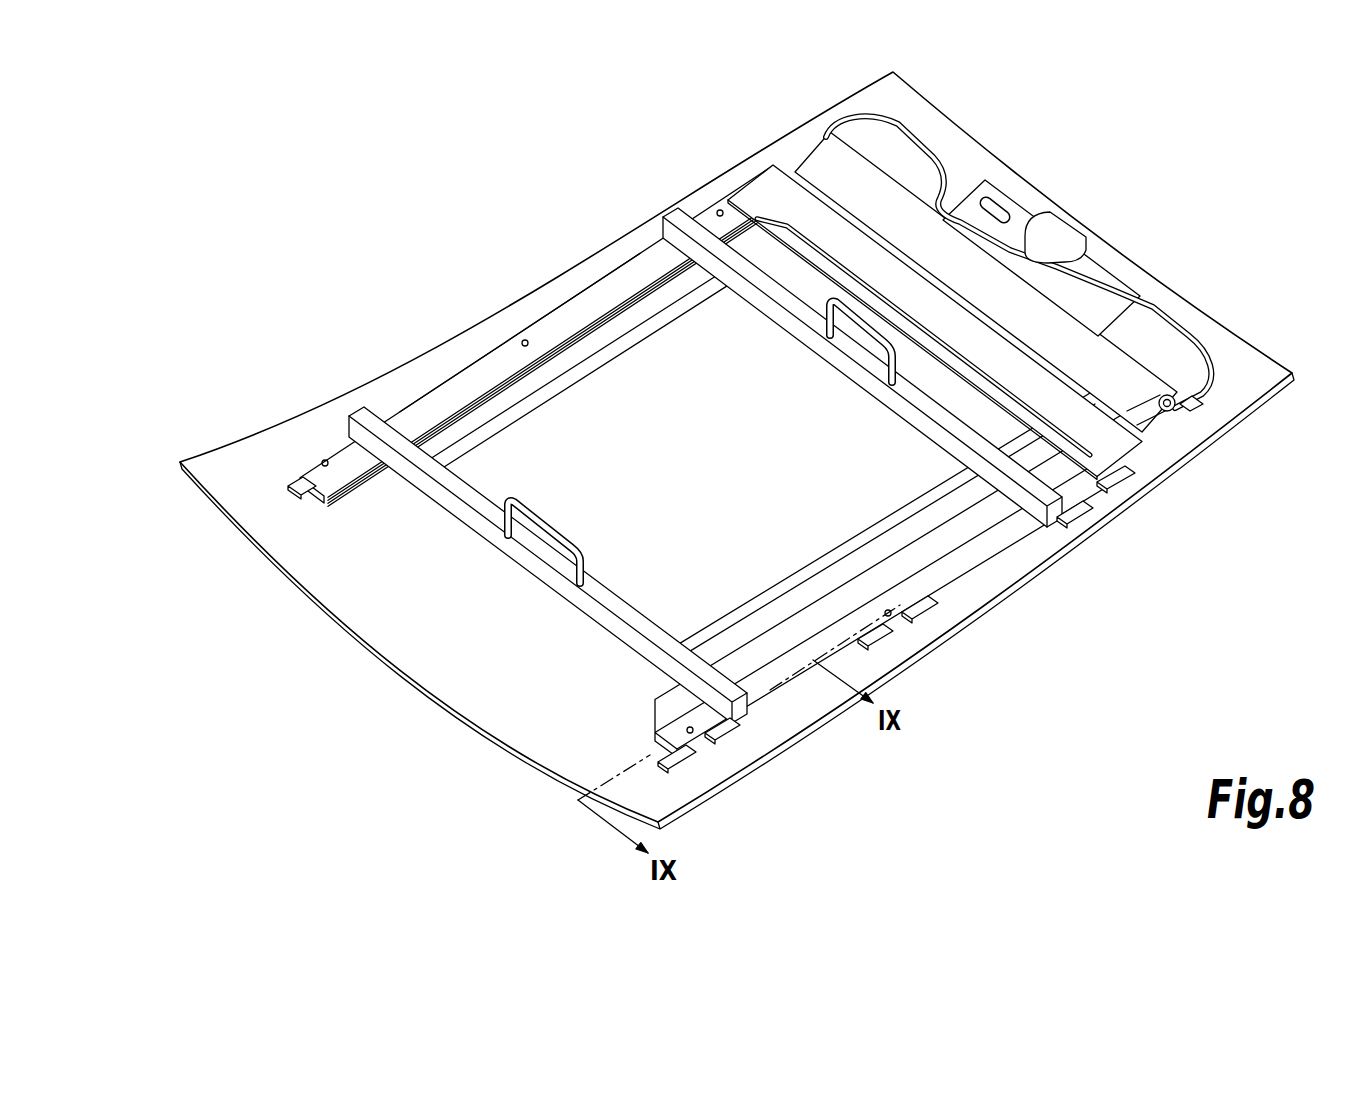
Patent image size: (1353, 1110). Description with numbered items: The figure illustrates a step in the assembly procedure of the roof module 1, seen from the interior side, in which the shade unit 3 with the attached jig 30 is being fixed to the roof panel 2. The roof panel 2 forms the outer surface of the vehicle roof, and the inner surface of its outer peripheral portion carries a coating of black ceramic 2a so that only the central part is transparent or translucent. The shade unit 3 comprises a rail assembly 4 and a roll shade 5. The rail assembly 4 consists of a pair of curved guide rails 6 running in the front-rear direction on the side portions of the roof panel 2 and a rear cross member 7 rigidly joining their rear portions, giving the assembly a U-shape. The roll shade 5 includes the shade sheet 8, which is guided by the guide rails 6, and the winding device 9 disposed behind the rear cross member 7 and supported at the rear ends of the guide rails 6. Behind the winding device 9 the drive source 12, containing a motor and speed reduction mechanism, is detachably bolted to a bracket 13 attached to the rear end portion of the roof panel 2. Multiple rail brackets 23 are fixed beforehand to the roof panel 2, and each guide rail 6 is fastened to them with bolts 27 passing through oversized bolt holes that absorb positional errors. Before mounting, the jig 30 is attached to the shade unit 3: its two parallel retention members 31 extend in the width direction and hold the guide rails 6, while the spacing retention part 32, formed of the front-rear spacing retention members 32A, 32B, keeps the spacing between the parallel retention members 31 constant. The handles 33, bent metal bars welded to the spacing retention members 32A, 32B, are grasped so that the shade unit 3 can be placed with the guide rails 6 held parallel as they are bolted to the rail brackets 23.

The roof module 1 is at (1140, 133).
The roof panel 2 is at (433, 703).
The black ceramic 2a is at (343, 607).
The shade unit 3 is at (764, 436).
The rail assembly 4 is at (580, 292).
The roll shade 5 is at (893, 172).
The guide rail 6 is at (490, 358).
The rear cross member 7 is at (760, 187).
The shade sheet 8 is at (1130, 413).
The winding device 9 is at (1195, 406).
The drive source 12 is at (1057, 228).
The bracket 13 is at (1102, 262).
The rail bracket 23 is at (290, 483).
The bolt 27 is at (325, 460).
The jig 30 is at (553, 630).
The parallel retention member 31 is at (772, 312).
The spacing retention part 32 is at (762, 466).
The spacing retention member 32A is at (810, 568).
The spacing retention member 32B is at (595, 367).
The handle 33 is at (873, 340).